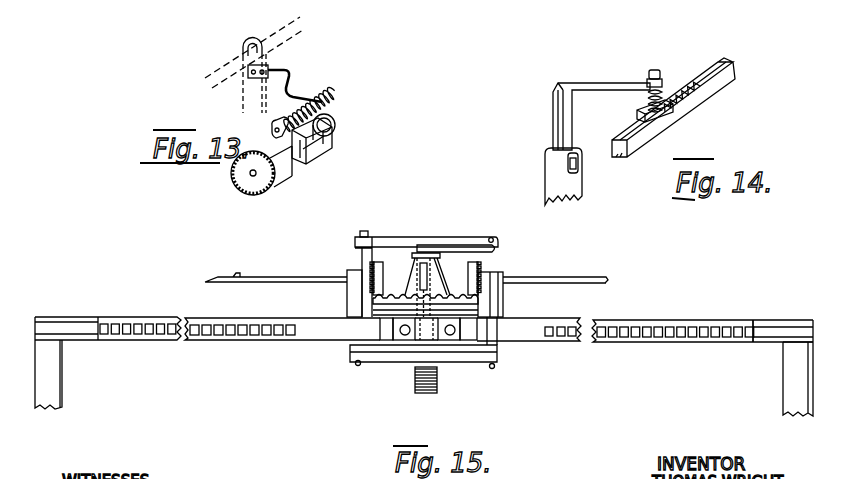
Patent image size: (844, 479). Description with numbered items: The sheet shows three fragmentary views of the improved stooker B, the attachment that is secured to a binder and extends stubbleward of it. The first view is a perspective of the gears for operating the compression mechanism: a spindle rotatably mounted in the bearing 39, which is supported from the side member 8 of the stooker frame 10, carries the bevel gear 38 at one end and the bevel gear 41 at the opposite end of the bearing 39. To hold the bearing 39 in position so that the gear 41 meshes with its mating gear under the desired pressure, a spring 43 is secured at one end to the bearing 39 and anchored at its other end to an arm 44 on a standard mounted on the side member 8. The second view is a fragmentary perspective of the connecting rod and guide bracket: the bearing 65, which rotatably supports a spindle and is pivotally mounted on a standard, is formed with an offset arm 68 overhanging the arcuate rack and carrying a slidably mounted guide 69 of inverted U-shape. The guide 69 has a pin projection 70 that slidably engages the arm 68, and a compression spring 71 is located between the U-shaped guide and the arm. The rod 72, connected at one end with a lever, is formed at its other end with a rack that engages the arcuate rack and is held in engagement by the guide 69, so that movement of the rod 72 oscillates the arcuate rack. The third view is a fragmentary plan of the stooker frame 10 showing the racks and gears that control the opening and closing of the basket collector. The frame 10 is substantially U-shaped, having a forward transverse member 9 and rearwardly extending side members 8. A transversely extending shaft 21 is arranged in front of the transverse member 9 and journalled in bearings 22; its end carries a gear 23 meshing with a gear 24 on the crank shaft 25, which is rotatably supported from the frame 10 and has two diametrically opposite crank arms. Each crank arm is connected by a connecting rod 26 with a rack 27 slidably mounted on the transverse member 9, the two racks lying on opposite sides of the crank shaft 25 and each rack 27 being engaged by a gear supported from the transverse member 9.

In FIG. 15, the side member 8 is at (43, 383).
In FIG. 15, the transverse member 9 is at (387, 332).
In FIG. 15, the stooker frame 10 is at (792, 367).
In FIG. 15, the shaft 21 is at (270, 280).
In FIG. 15, the bearing 22 is at (353, 282).
In FIG. 15, the gear 23 is at (470, 263).
In FIG. 15, the gear 24 is at (373, 301).
In FIG. 15, the crank shaft 25 is at (470, 246).
In FIG. 15, the connecting rod 26 is at (463, 245).
In FIG. 15, the rack 27 is at (143, 319).
In FIG. 15, the stooker B is at (763, 320).
In FIG. 13, the bevel gear 38 is at (334, 123).
In FIG. 13, the bearing 39 is at (308, 155).
In FIG. 13, the bevel gear 41 is at (270, 178).
In FIG. 13, the spring 43 is at (330, 102).
In FIG. 13, the arm 44 is at (292, 85).
In FIG. 14, the bearing 65 is at (555, 175).
In FIG. 14, the offset arm 68 is at (605, 83).
In FIG. 14, the guide 69 is at (675, 122).
In FIG. 14, the pin projection 70 is at (657, 70).
In FIG. 14, the compression spring 71 is at (640, 104).
In FIG. 14, the rod 72 is at (724, 86).